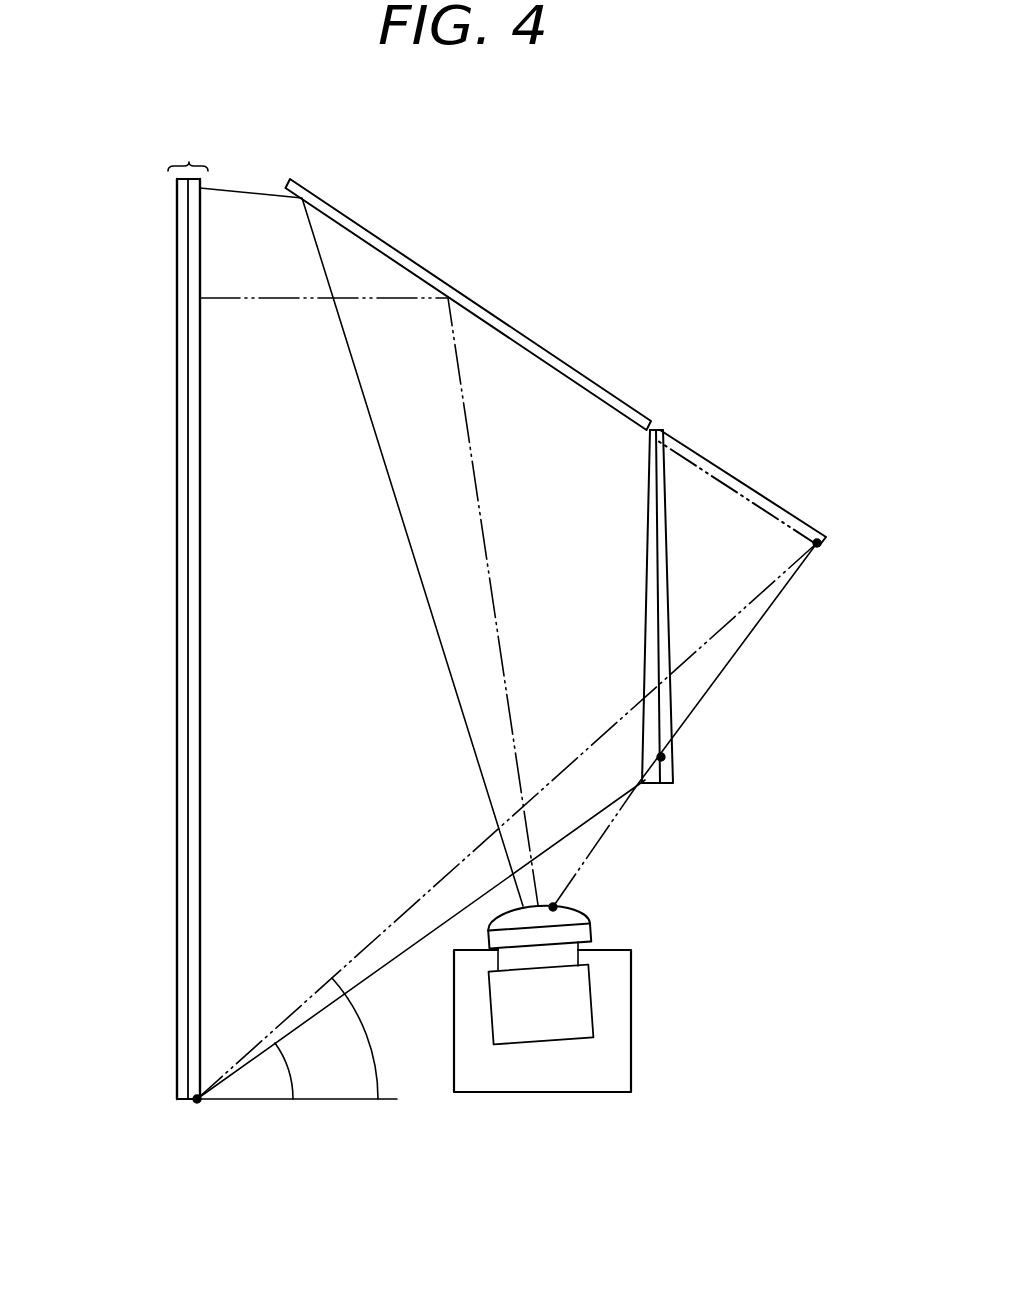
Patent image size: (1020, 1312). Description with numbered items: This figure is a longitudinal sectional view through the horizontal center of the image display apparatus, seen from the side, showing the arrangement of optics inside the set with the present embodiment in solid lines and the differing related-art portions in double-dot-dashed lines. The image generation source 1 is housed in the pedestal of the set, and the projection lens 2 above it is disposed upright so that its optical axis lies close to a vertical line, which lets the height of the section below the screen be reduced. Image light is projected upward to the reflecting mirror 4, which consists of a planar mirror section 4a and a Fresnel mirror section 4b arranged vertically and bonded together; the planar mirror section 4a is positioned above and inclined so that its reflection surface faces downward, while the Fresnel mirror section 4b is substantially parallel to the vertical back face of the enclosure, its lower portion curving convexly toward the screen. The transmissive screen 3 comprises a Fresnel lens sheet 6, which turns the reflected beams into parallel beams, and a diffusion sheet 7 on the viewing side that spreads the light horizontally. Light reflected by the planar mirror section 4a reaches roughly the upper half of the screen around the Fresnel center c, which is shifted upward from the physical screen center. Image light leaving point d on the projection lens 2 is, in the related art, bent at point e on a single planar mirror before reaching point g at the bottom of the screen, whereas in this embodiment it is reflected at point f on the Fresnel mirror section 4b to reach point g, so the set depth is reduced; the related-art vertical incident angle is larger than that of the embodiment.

The image generation source 1 is at (615, 1062).
The projection lens 2 is at (568, 953).
The transmissive screen 3 is at (189, 160).
The reflecting mirror 4 is at (630, 403).
The planar mirror section 4a is at (520, 333).
The Fresnel mirror section 4b is at (670, 642).
The Fresnel lens sheet 6 is at (200, 244).
The diffusion sheet 7 is at (177, 238).
The Fresnel center c is at (200, 299).
The point d is at (560, 907).
The point e is at (818, 544).
The point f is at (666, 757).
The point g is at (197, 1104).